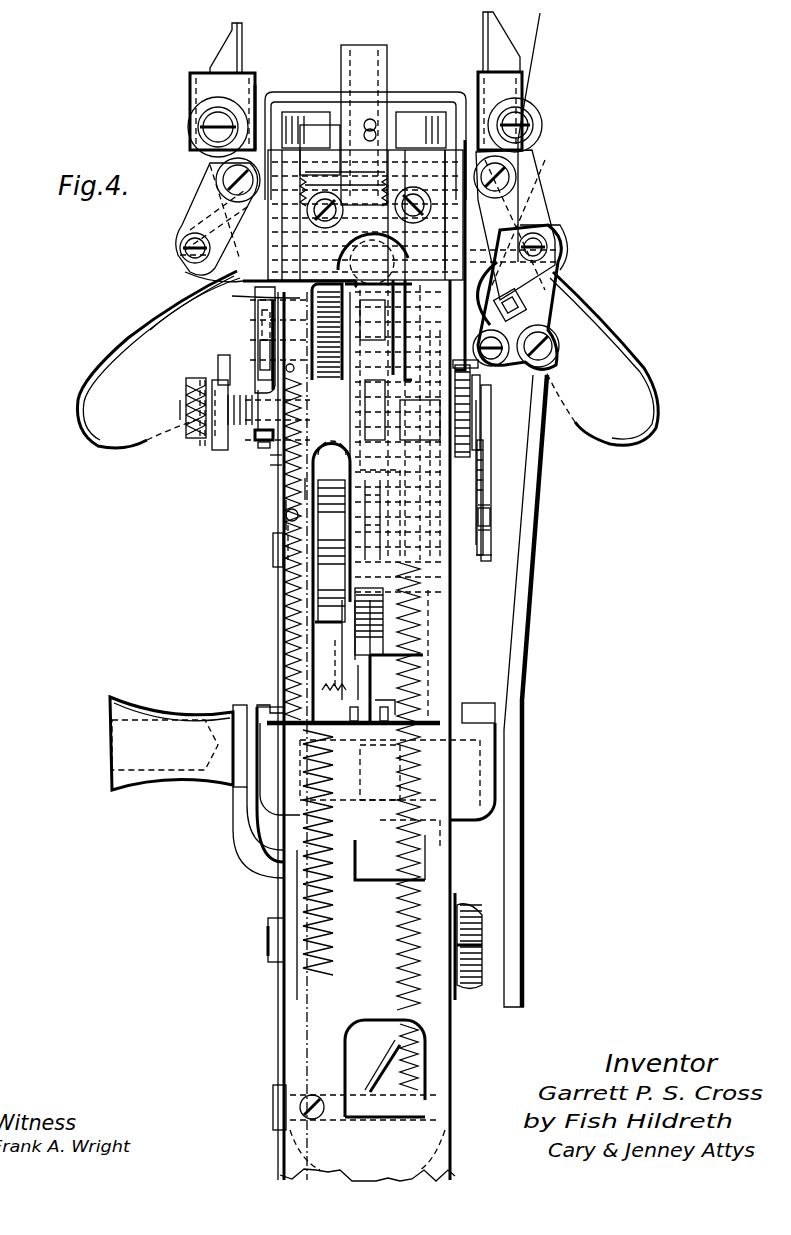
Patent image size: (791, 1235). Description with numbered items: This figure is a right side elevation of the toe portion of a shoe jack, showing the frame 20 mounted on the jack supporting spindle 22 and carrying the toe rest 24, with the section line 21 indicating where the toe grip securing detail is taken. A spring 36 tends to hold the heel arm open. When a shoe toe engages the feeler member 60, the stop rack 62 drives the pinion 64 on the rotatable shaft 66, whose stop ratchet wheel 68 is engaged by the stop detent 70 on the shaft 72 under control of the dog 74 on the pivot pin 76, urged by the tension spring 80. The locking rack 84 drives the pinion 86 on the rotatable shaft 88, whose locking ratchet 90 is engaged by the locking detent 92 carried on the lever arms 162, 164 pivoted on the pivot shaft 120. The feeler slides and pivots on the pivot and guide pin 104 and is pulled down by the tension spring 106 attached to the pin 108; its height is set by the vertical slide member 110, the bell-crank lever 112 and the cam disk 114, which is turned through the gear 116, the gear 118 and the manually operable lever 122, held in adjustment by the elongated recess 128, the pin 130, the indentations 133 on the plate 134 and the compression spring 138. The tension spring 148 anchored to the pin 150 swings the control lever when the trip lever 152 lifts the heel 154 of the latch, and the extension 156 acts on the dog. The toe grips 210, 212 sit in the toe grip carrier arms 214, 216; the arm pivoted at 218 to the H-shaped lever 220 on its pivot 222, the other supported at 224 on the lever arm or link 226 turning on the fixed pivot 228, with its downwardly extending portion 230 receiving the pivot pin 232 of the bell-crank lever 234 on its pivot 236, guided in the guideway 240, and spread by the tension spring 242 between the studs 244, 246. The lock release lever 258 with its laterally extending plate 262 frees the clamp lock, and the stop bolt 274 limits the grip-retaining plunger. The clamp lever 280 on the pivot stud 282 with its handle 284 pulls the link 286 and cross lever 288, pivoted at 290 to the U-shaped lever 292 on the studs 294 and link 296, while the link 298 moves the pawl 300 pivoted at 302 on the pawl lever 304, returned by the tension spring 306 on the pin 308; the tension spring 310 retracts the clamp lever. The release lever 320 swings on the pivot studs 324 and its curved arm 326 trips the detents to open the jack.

The frame 20 is at (450, 652).
The section line 21— 21 is at (545, 40).
The jack supporting spindle 22 is at (290, 1150).
The toe rest 24 is at (440, 98).
The spring 36 is at (385, 1065).
The feeler member 60 is at (362, 50).
The stop rack 62 is at (310, 480).
The pinion 64 is at (280, 470).
The rotatable shaft 66 is at (278, 460).
The stop ratchet wheel 68 is at (270, 445).
The stop detent 70 is at (265, 385).
The shaft 72 is at (185, 408).
The dog 74 is at (260, 328).
The pivot pin 76 is at (258, 312).
The tension spring 80 is at (256, 298).
The locking rack 84 is at (354, 692).
The pinion 86 is at (340, 515).
The rotatable shaft 88 is at (280, 540).
The locking ratchet 90 is at (355, 630).
The locking detent 92 is at (340, 485).
The pivot and guide pin 104 is at (395, 215).
The tension spring 106 is at (405, 128).
The pin 108 is at (370, 128).
The vertical slide member 110 is at (262, 283).
The bell-crank lever 112 is at (388, 308).
The cam disk 114 is at (370, 540).
The gear 116 is at (475, 395).
The gear 118 is at (490, 462).
The pivot shaft 120 is at (490, 428).
The manually operable lever 122 is at (490, 552).
The elongated recess 128 is at (490, 508).
The pin 130 is at (490, 535).
The indentations 133 is at (482, 485).
The plate 134 is at (470, 380).
The compression spring 138 is at (490, 520).
The tension spring 148 is at (290, 498).
The pin 150 is at (290, 516).
The trip lever 152 is at (280, 352).
The heel 154 is at (345, 340).
The extension 156 is at (256, 340).
The lever arm 162 is at (262, 440).
The lever arm 164 is at (375, 520).
The toe grip 210 is at (218, 48).
The toe grip 212 is at (495, 32).
The toe grip carrier arm 214 is at (195, 160).
The toe grip carrier arm 216 is at (530, 160).
The pivot 218 is at (515, 175).
The H-shaped lever 220 is at (520, 195).
The pivot 222 is at (550, 247).
The support pivot 224 is at (225, 185).
The lever arm or link 226 is at (230, 200).
The fixed pivot 228 is at (185, 270).
The downwardly extending portion 230 is at (556, 240).
The pivot pin 232 is at (520, 305).
The bell-crank lever 234 is at (510, 345).
The pivot 236 is at (545, 340).
The guideway 240 is at (180, 243).
The tension spring 242 is at (340, 145).
The stud 244 is at (298, 148).
The stud 246 is at (445, 170).
The lock release lever 258 is at (335, 262).
The laterally extending plate 262 is at (178, 258).
The stop bolt 274 is at (187, 127).
The clamp lever 280 is at (240, 818).
The pivot stud 282 is at (275, 945).
The handle 284 is at (110, 745).
The link 286 is at (395, 852).
The cross lever 288 is at (395, 700).
The pivotal connection 290 is at (440, 840).
The U-shaped lever 292 is at (485, 812).
The studs 294 is at (500, 710).
The link 296 is at (522, 618).
The link 298 is at (365, 675).
The pawl 300 is at (342, 645).
The pivot 302 is at (435, 584).
The pawl lever 304 is at (432, 604).
The tension spring 306 is at (420, 685).
The pin 308 is at (278, 1110).
The tension spring 310 is at (340, 660).
The release lever 320 is at (80, 412).
The pivot studs 324 is at (175, 290).
The curved arm 326 is at (230, 300).